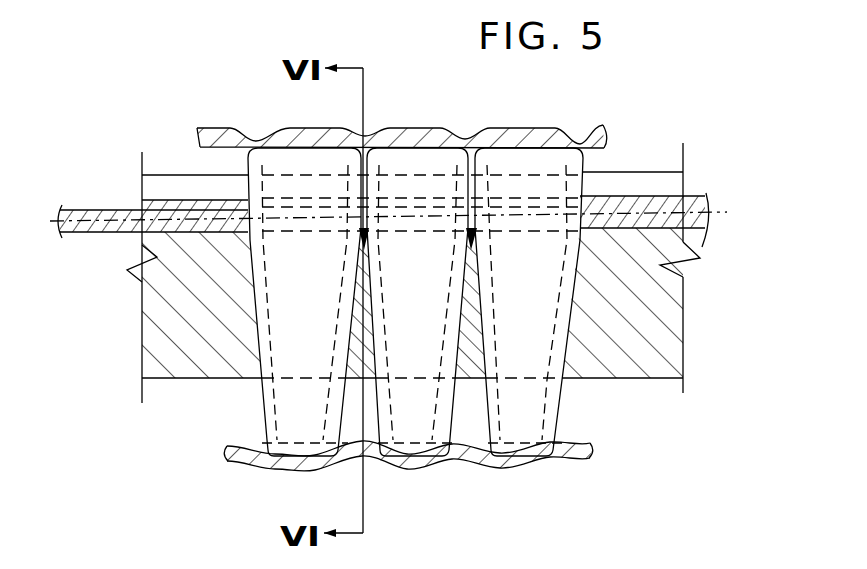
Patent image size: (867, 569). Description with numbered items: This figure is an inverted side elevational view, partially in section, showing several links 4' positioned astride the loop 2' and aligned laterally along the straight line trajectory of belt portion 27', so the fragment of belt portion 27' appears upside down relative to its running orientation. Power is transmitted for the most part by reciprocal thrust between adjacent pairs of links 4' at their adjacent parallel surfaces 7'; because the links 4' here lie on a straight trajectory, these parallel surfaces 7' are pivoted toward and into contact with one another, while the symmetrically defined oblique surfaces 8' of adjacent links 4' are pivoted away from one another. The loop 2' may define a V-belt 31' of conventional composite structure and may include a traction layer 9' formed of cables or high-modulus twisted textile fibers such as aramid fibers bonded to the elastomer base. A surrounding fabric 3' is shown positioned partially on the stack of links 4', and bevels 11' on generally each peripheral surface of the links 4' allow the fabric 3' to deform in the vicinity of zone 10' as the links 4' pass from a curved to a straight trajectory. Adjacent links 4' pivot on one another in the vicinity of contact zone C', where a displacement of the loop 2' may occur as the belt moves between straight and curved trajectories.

The loop 2' is at (462, 268).
The surrounding fabric 3' is at (415, 228).
The link 4' is at (389, 293).
The parallel surface 7' is at (407, 134).
The oblique surface 8' is at (413, 333).
The traction layer 9' is at (386, 193).
The zone 10' is at (408, 479).
The bevel 11' is at (412, 388).
The belt portion 27' is at (128, 302).
The V-belt 31' is at (183, 292).
The contact zone C' is at (126, 259).